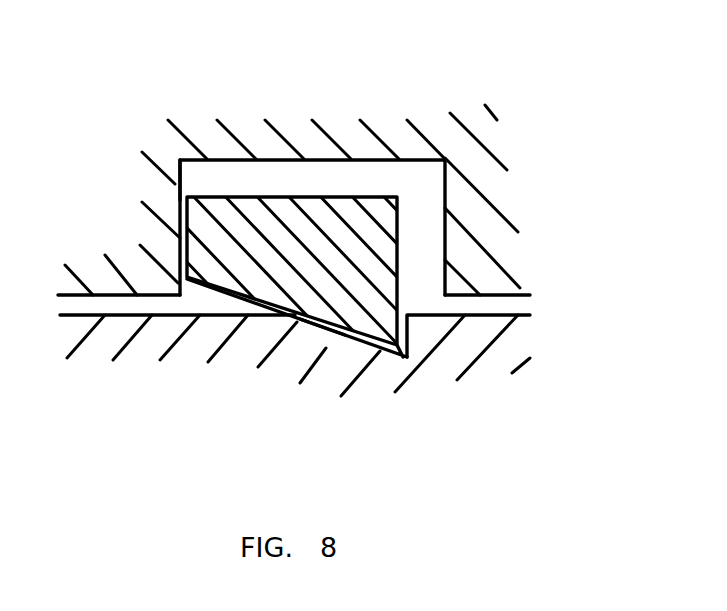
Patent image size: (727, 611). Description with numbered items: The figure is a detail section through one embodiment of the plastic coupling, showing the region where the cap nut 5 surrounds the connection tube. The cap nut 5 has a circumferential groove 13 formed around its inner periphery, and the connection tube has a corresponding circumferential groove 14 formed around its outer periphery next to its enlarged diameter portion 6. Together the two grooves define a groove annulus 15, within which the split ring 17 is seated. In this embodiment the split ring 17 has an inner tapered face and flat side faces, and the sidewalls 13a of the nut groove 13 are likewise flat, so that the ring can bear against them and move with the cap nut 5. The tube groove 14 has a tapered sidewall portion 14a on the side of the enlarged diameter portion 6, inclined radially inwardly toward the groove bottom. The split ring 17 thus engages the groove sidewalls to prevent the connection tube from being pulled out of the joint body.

The cap nut 5 is at (412, 138).
The enlarged diameter portion 6 is at (497, 352).
The circumferential groove 13 is at (358, 178).
The sidewall portion 13a is at (180, 178).
The circumferential groove 14 is at (358, 340).
The tapered sidewall portion 14a is at (331, 328).
The groove annulus 15 is at (420, 220).
The split ring 17 is at (292, 220).